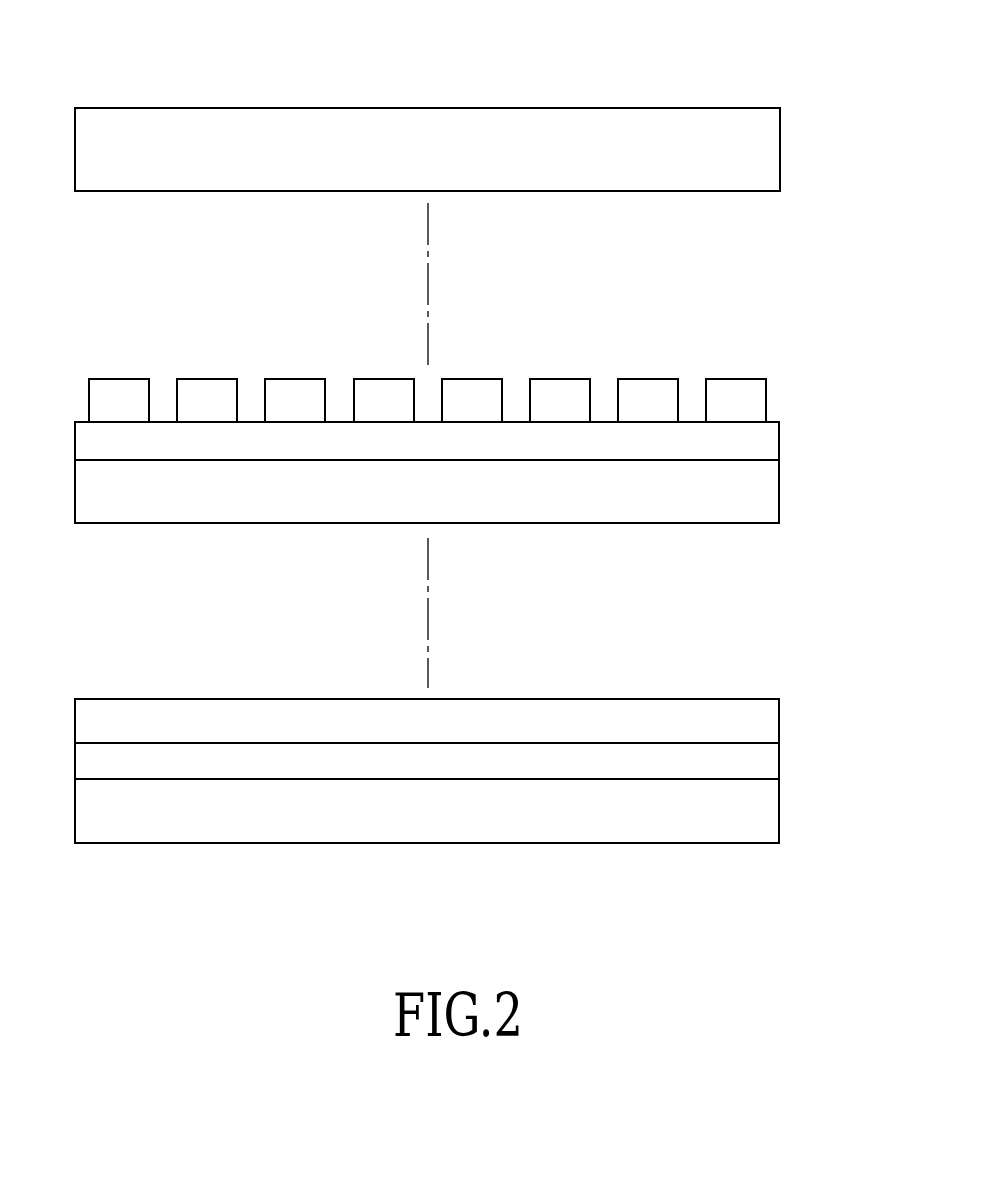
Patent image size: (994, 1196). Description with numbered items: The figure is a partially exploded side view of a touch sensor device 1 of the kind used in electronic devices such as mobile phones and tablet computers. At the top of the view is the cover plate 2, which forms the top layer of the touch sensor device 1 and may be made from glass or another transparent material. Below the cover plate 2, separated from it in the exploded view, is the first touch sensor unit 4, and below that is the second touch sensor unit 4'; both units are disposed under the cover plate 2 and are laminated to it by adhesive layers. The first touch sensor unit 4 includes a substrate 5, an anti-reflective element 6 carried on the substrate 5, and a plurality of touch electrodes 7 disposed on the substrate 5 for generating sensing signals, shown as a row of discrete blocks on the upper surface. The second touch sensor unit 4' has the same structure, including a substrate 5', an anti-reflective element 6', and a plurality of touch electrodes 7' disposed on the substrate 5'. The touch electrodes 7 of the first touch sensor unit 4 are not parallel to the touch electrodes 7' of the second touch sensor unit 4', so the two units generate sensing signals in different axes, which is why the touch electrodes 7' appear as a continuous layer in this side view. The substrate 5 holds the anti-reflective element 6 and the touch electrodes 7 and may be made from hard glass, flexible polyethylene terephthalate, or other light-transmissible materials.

The touch sensor device 1 is at (48, 55).
The cover plate 2 is at (770, 137).
The first touch sensor unit 4 is at (477, 451).
The substrate 5 is at (455, 491).
The anti-reflective element 6 is at (455, 442).
The touch electrodes 7 is at (462, 402).
The second touch sensor unit 4' is at (481, 771).
The substrate 5' is at (459, 811).
The anti-reflective element 6' is at (459, 762).
The touch electrodes 7' is at (459, 721).